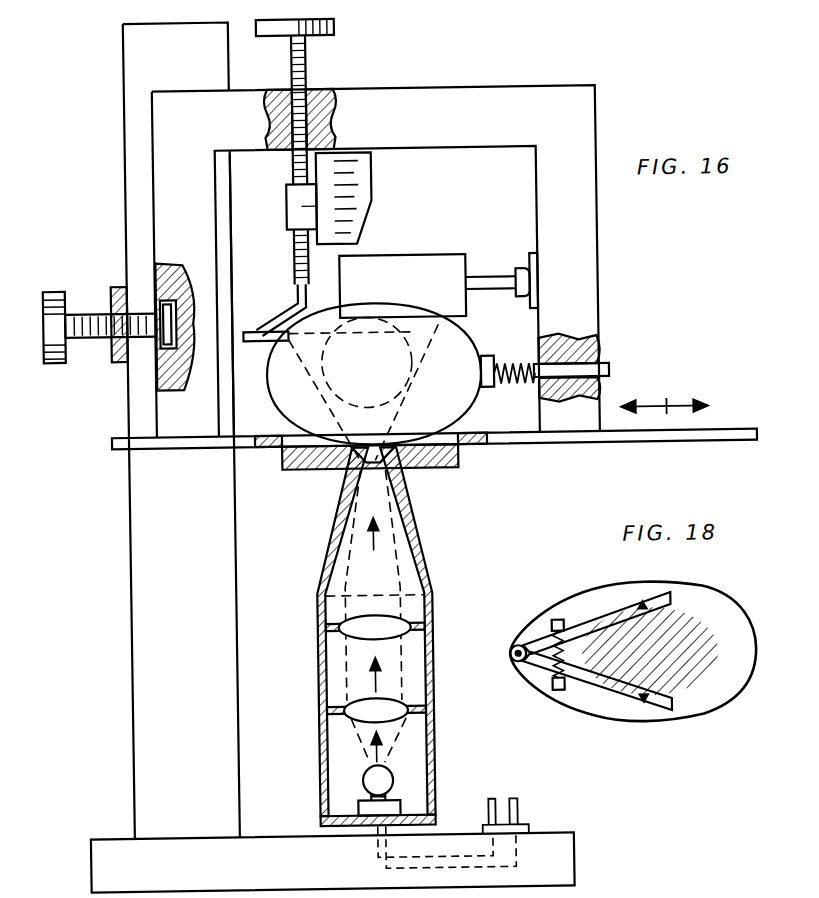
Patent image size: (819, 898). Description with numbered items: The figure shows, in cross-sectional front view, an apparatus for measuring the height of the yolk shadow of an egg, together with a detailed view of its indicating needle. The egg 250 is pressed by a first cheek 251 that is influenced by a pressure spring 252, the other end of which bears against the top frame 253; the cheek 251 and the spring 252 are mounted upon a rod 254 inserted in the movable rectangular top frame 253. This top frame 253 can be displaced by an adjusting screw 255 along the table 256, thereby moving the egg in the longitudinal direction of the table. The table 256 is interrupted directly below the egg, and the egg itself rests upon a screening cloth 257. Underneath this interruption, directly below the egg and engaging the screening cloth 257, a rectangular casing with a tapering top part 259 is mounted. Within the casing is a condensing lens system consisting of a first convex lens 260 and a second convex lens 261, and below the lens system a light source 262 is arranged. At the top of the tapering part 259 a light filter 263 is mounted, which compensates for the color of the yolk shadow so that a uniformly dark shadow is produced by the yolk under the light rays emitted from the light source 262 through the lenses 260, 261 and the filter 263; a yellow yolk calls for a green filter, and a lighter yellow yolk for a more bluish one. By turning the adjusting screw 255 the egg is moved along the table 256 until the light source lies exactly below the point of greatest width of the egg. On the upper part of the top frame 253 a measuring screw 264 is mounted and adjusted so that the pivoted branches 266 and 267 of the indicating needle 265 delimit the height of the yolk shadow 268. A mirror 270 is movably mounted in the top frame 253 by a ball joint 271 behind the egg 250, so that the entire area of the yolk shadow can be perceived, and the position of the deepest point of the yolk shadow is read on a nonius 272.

In FIG. 16, the egg 250 is at (467, 353).
In FIG. 16, the first cheek 251 is at (490, 386).
In FIG. 16, the pressure spring 252 is at (532, 362).
In FIG. 16, the top frame 253 is at (605, 130).
In FIG. 16, the rod 254 is at (611, 376).
In FIG. 16, the adjusting screw 255 is at (59, 356).
In FIG. 16, the table 256 is at (566, 446).
In FIG. 16, the screening cloth 257 is at (292, 470).
In FIG. 16, the tapering top part 259 is at (418, 560).
In FIG. 16, the first convex lens 260 is at (350, 716).
In FIG. 16, the second convex lens 261 is at (345, 633).
In FIG. 16, the light source 262 is at (395, 776).
In FIG. 16, the light filter 263 is at (390, 472).
In FIG. 16, the measuring screw 264 is at (331, 34).
In FIG. 16, the indicating needle 265 is at (267, 320).
In FIG. 18, the indicating needle 265 is at (506, 656).
In FIG. 18, the pivoted branch 266 is at (535, 617).
In FIG. 18, the pivoted branch 267 is at (528, 706).
In FIG. 18, the yolk shadow 268 is at (680, 690).
In FIG. 16, the mirror 270 is at (418, 266).
In FIG. 16, the ball joint 271 is at (525, 272).
In FIG. 16, the nonius 272 is at (290, 192).